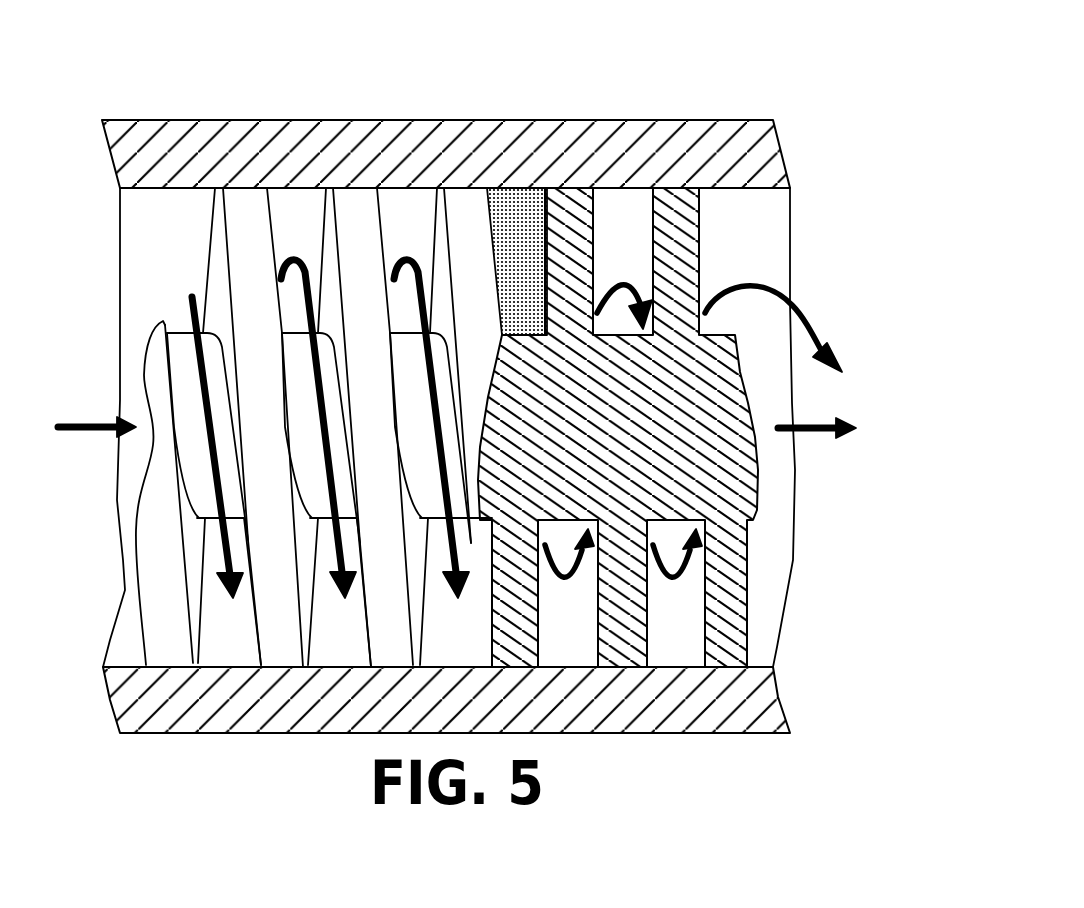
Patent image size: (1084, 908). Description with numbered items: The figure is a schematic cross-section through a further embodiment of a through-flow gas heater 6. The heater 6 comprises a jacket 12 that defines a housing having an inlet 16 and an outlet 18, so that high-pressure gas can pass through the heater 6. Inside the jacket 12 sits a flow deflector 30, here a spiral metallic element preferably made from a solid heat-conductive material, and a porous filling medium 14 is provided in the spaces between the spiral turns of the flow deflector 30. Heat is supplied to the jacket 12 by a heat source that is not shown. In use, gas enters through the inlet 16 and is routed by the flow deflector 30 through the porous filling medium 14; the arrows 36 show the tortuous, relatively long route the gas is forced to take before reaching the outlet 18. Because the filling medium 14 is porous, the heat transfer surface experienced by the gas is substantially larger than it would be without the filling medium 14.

The through-flow gas heater 6 is at (714, 95).
The jacket 12 is at (669, 722).
The porous filling medium 14 is at (513, 200).
The inlet 16 is at (100, 462).
The outlet 18 is at (808, 465).
The flow deflector 30 is at (287, 648).
The arrows 36 is at (230, 560).